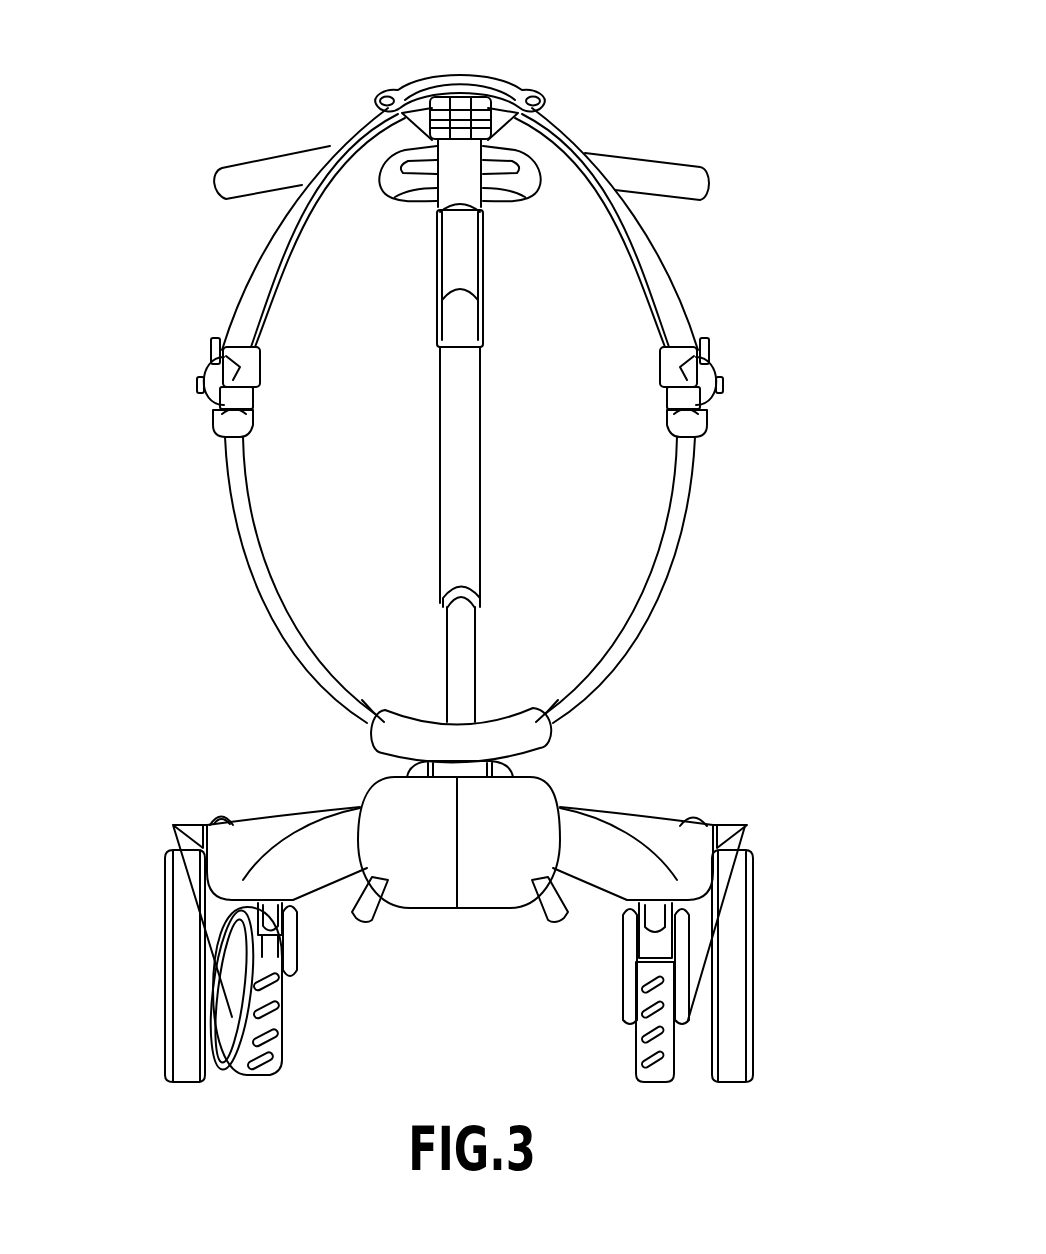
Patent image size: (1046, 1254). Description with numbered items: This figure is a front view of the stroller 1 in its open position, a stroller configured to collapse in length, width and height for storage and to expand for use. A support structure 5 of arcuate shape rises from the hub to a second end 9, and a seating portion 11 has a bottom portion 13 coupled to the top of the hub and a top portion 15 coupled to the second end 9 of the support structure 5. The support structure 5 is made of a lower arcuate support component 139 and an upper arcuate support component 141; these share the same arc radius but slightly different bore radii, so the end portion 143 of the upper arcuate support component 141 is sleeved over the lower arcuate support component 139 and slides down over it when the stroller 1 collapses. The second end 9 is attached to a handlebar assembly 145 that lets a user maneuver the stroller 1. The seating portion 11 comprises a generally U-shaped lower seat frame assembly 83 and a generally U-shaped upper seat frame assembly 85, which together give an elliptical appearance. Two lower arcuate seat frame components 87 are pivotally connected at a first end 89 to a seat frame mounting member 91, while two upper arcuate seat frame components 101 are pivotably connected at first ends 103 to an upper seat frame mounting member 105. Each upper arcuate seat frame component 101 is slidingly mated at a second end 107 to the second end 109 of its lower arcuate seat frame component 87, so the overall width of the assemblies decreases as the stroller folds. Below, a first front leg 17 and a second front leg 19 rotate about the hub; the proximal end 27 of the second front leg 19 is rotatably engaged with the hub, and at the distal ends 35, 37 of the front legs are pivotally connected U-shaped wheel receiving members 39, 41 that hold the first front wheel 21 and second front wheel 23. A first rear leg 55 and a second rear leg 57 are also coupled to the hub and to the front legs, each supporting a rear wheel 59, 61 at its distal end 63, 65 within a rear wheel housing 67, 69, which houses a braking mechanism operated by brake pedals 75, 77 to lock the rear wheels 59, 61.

The stroller 1 is at (772, 42).
The support structure 5 is at (481, 478).
The second end 9 is at (500, 150).
The seating portion 11 is at (800, 222).
The bottom portion 13 is at (536, 752).
The top portion 15 is at (410, 86).
The first front leg 17 is at (648, 860).
The second front leg 19 is at (289, 877).
The first front wheel 21 is at (632, 1055).
The second front wheel 23 is at (272, 1025).
The proximal end 27 is at (370, 801).
The distal end 35 is at (688, 925).
The distal end 37 is at (242, 936).
The wheel receiving member 39 is at (688, 965).
The wheel receiving member 41 is at (238, 985).
The first rear leg 55 is at (706, 880).
The second rear leg 57 is at (280, 808).
The rear wheel 59 is at (740, 1045).
The rear wheel 61 is at (165, 875).
The distal end 63 is at (722, 830).
The distal end 65 is at (218, 820).
The rear wheel housing 67 is at (694, 1022).
The rear wheel housing 69 is at (188, 835).
The brake pedal 75 is at (714, 826).
The brake pedal 77 is at (232, 814).
The lower seat frame assembly 83 is at (745, 566).
The upper seat frame assembly 85 is at (158, 310).
The lower arcuate seat frame component 87 is at (251, 577).
The first end 89 is at (352, 707).
The seat frame mounting member 91 is at (495, 714).
The upper arcuate seat frame component 101 is at (246, 265).
The first end 103 is at (378, 107).
The upper seat frame mounting member 105 is at (455, 86).
The second end 107 is at (234, 400).
The second end 109 is at (232, 446).
The lower arcuate support component 139 is at (445, 672).
The upper arcuate support component 141 is at (484, 384).
The end portion 143 is at (482, 592).
The handlebar assembly 145 is at (705, 150).